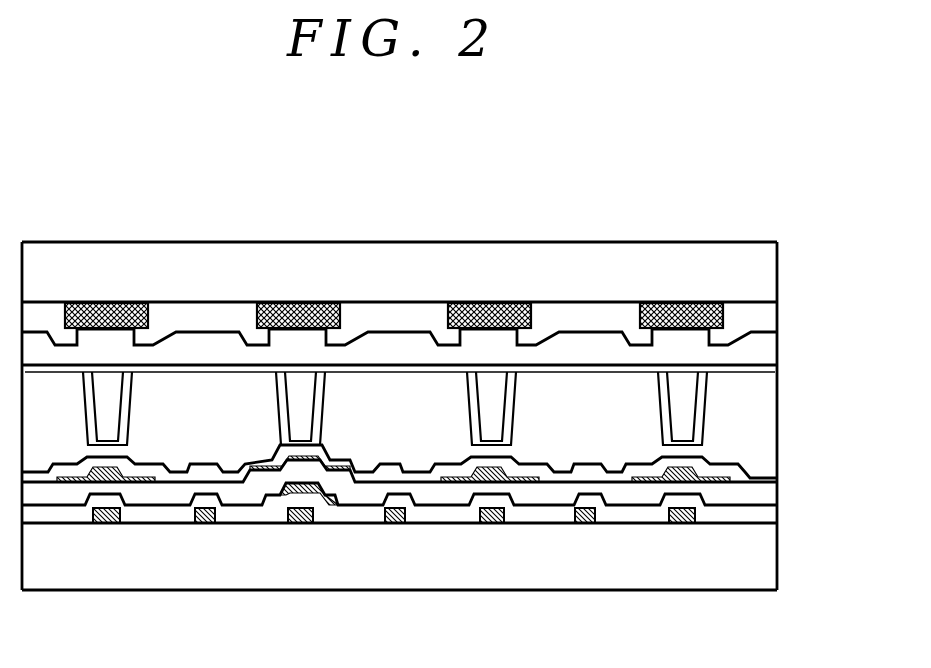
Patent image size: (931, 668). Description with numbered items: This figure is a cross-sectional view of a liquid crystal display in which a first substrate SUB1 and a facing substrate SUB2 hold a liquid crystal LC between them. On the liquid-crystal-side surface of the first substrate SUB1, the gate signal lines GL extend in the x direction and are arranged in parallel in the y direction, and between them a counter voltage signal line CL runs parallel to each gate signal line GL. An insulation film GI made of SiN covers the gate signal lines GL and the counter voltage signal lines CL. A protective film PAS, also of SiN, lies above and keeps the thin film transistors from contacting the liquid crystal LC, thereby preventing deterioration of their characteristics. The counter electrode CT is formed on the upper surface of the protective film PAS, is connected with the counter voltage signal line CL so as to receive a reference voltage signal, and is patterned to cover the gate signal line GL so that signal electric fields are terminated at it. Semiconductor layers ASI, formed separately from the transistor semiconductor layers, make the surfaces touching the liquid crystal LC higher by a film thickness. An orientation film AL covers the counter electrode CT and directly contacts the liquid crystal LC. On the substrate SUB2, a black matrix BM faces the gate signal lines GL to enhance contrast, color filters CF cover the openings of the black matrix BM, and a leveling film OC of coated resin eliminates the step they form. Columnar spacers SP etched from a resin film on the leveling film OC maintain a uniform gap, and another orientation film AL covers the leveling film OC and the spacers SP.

The black matrix BM is at (660, 302).
The color filters CF is at (748, 313).
The substrate SUB2 is at (762, 266).
The leveling film OC is at (768, 348).
The orientation film AL is at (773, 372).
The spacers SP is at (690, 400).
The liquid crystal LC is at (765, 445).
The protective film PAS is at (770, 495).
The insulation film GI is at (770, 518).
The first substrate SUB1 is at (762, 565).
The counter voltage signal line CL is at (202, 525).
The counter electrode CT is at (256, 474).
The gate signal lines GL is at (295, 525).
The semiconductor layers ASI is at (329, 506).